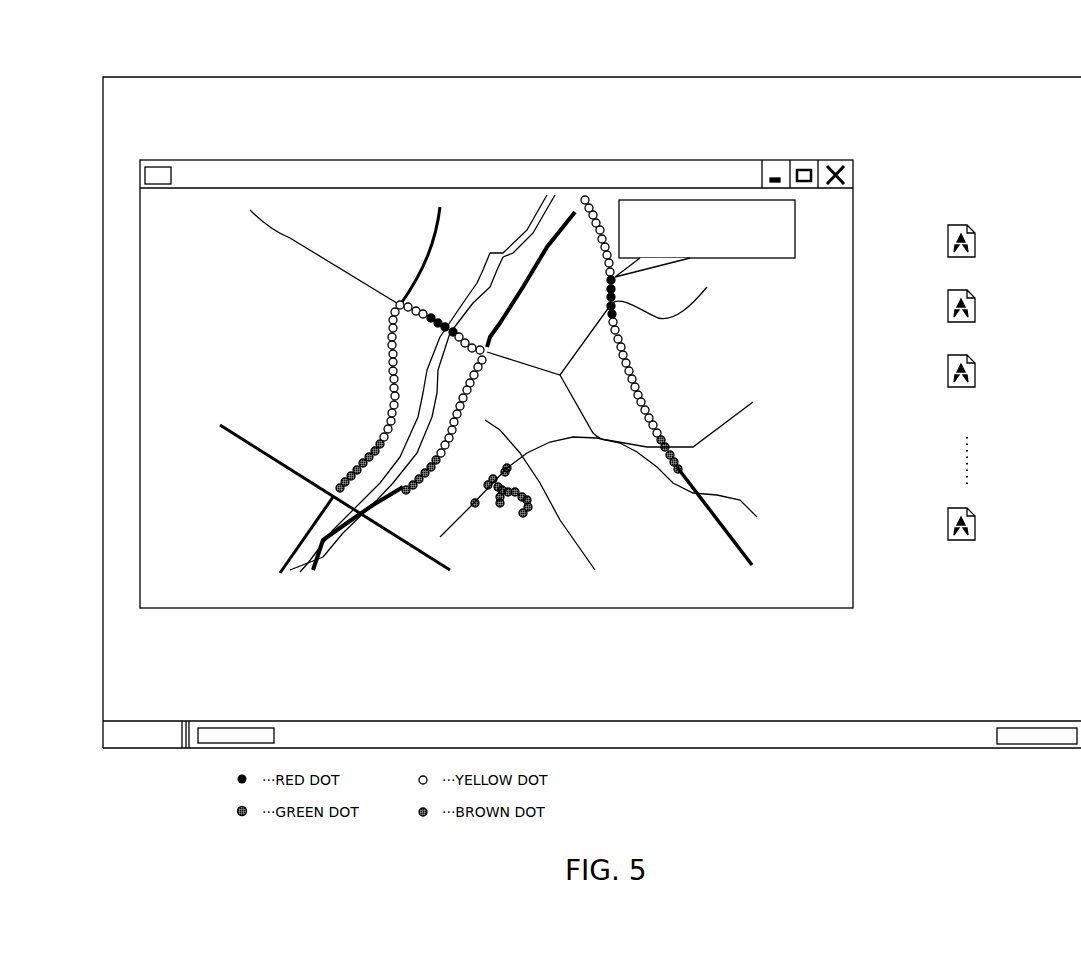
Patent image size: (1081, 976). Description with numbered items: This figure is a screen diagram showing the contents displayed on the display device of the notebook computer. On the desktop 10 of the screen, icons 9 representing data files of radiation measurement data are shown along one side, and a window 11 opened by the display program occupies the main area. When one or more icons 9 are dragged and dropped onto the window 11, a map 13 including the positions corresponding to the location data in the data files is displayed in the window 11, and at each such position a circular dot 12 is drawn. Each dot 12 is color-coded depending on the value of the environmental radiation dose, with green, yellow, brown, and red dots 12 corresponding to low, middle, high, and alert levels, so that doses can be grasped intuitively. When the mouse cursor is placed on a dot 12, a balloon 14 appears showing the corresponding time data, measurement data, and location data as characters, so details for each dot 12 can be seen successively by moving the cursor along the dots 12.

The icon 9 is at (976, 245).
The desktop 10 is at (631, 77).
The window 11 is at (440, 160).
The circular dot 12 is at (392, 385).
The map 13 is at (620, 545).
The balloon 14 is at (732, 260).